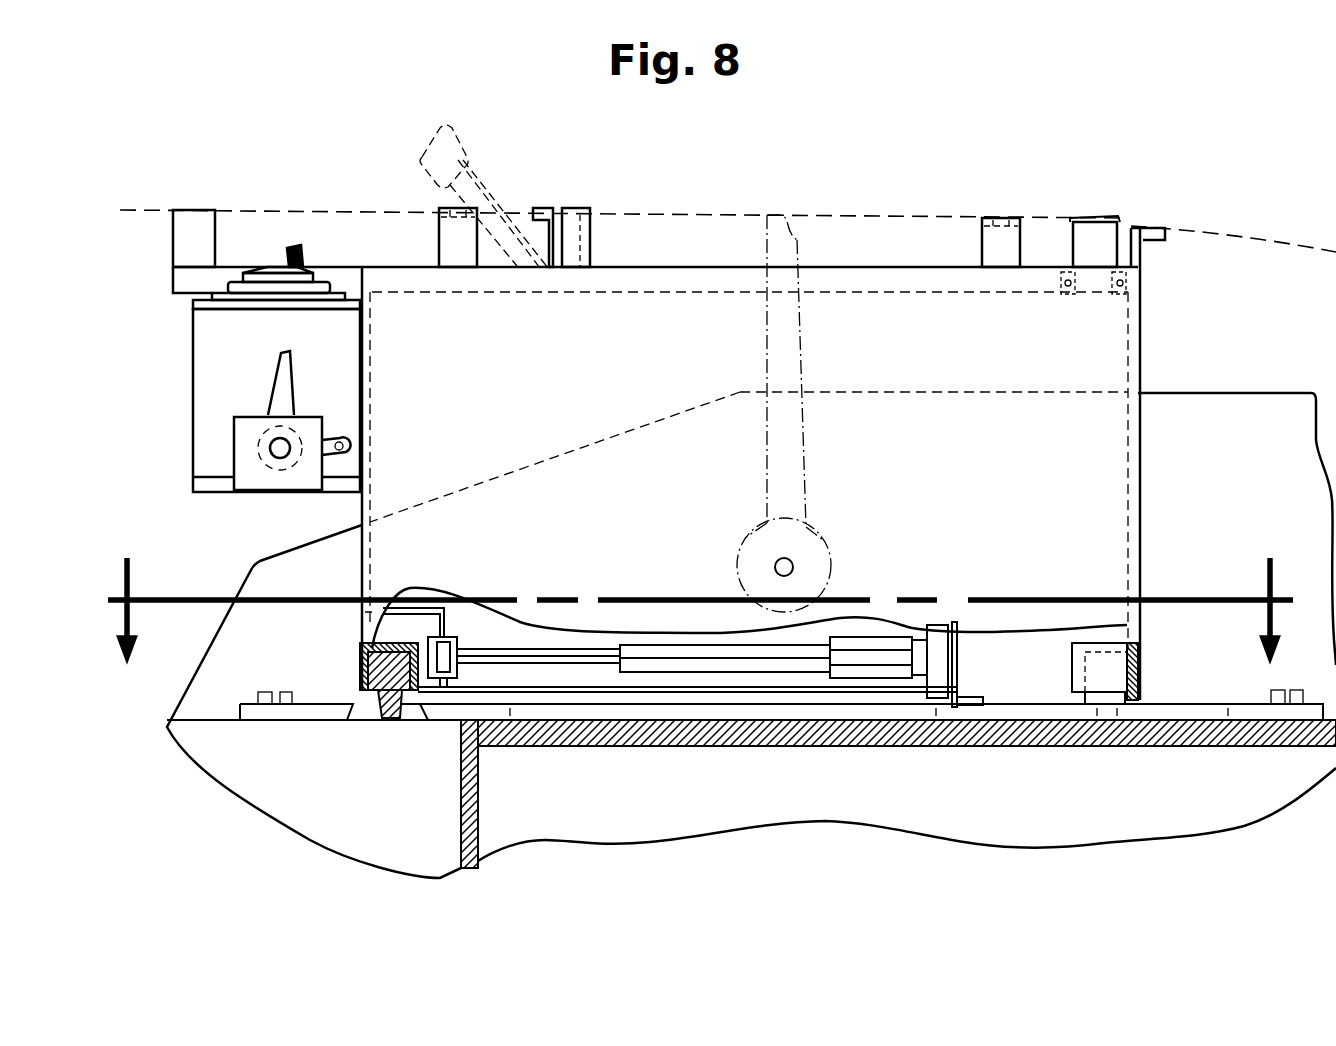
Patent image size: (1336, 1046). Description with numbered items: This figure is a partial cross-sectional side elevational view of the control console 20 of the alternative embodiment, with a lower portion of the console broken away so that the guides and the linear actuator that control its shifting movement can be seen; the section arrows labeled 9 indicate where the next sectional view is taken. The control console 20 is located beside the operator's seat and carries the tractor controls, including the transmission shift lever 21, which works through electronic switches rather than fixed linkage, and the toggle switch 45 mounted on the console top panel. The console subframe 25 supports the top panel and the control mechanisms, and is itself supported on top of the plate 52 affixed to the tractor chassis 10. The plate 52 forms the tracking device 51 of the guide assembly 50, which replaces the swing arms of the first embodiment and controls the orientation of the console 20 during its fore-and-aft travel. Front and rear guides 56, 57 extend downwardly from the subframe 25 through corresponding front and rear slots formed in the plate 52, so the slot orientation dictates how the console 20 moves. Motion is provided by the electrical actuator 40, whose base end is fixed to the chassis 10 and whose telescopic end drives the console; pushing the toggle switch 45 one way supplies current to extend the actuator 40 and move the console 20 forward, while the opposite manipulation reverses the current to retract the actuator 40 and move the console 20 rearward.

The section line 9- 9 is at (700, 594).
The tractor chassis 10 is at (961, 748).
The control console 20 is at (1140, 332).
The transmission shift lever 21 is at (242, 340).
The console subframe 25 is at (1142, 652).
The electrical actuator 40 is at (862, 658).
The toggle switch 45 is at (1082, 218).
The guide assembly 50 is at (238, 668).
The tracking device 51 is at (442, 748).
The plate 52 is at (313, 706).
The front guide 56 is at (393, 720).
The rear guide 57 is at (1136, 714).